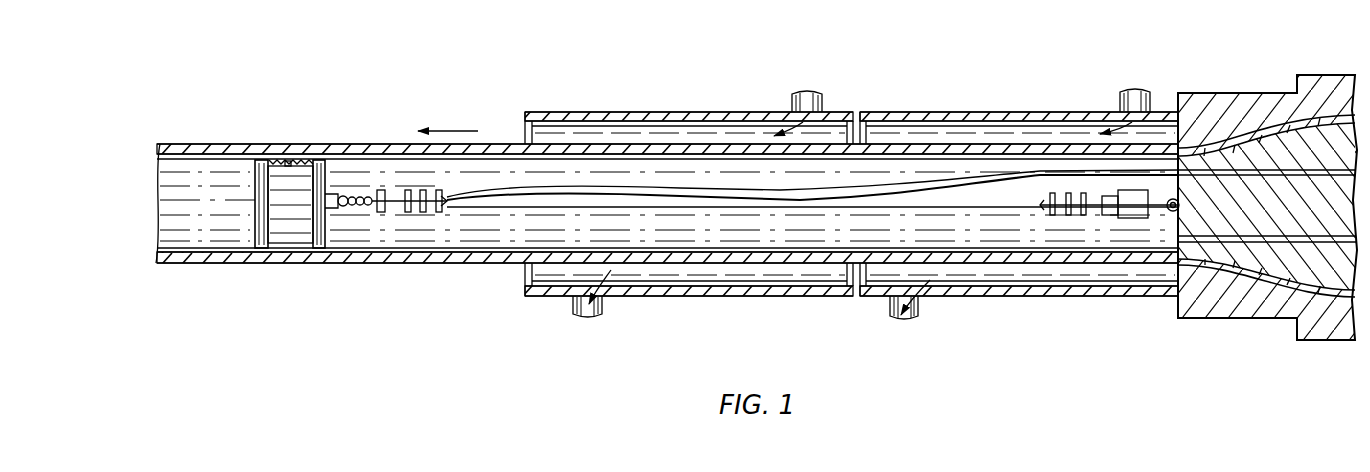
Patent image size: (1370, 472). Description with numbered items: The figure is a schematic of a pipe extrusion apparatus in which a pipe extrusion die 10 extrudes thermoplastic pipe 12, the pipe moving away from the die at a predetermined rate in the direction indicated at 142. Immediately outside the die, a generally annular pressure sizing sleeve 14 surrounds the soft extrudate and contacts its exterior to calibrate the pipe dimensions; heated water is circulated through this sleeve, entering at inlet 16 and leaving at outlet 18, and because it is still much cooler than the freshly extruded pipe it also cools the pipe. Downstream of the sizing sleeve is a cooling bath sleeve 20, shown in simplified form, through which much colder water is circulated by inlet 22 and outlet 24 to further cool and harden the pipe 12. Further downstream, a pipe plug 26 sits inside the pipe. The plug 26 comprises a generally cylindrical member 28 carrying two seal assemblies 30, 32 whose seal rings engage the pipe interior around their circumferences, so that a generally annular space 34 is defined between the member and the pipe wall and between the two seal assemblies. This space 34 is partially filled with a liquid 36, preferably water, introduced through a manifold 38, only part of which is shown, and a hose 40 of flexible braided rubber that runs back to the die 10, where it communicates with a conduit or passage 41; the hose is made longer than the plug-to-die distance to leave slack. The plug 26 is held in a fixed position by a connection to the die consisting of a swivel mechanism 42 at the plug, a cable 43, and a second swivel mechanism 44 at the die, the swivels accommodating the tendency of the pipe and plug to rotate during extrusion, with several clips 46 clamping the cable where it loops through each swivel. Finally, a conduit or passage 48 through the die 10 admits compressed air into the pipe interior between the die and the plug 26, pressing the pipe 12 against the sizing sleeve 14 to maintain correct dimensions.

The pipe extrusion die 10 is at (1238, 93).
The thermoplastic pipe 12 is at (1136, 266).
The pressure sizing sleeve 14 is at (965, 272).
The inlet 16 is at (1140, 92).
The outlet 18 is at (890, 306).
The cooling bath sleeve 20 is at (686, 297).
The inlet 22 is at (820, 92).
The outlet 24 is at (574, 314).
The pipe plug 26 is at (250, 196).
The cylindrical member 28 is at (300, 236).
The seal assembly 30 is at (263, 263).
The seal assembly 32 is at (319, 263).
The annular space 34 is at (284, 156).
The liquid 36 is at (308, 152).
The manifold 38 is at (335, 210).
The hose 40 is at (528, 183).
The conduit or passage 41 is at (1284, 160).
The swivel mechanism 42 is at (385, 214).
The cable 43 is at (603, 209).
The swivel mechanism 44 is at (1130, 219).
The clips 46 is at (440, 214).
The conduit or passage 48 is at (1270, 246).
The direction of pipe movement 142 is at (459, 131).